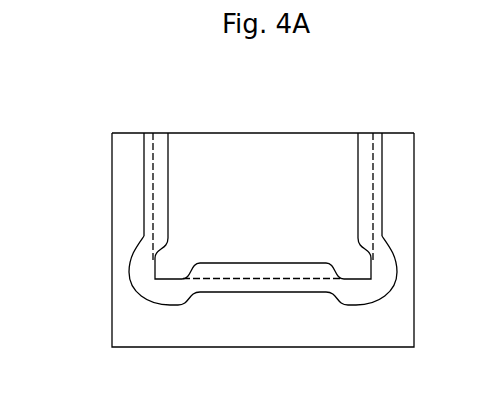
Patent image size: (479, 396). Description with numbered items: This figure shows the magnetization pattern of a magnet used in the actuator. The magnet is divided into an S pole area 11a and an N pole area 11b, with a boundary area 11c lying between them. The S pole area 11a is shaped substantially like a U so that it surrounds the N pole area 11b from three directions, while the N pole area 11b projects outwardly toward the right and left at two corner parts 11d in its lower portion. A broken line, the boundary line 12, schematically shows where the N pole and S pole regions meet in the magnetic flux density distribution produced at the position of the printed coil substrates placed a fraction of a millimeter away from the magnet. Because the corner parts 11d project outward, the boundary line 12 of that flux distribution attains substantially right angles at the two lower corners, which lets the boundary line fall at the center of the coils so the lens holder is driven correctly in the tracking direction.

The S pole area 11a is at (118, 170).
The N pole area 11b is at (303, 134).
The boundary area 11c is at (378, 133).
The corner parts 11d is at (163, 263).
The boundary line 12 is at (163, 143).